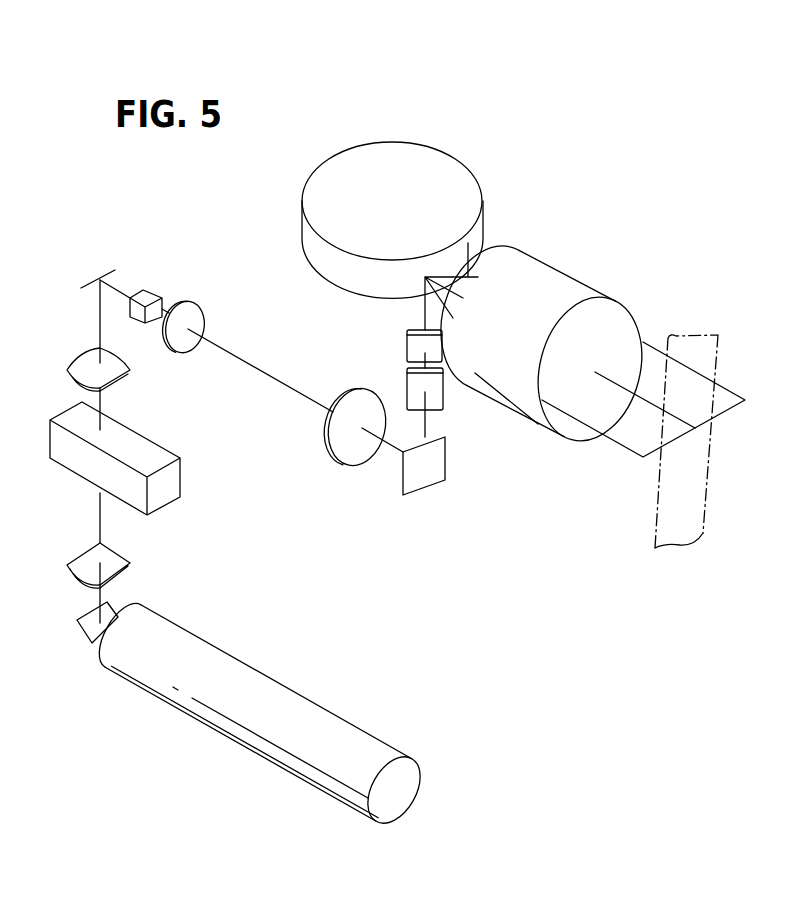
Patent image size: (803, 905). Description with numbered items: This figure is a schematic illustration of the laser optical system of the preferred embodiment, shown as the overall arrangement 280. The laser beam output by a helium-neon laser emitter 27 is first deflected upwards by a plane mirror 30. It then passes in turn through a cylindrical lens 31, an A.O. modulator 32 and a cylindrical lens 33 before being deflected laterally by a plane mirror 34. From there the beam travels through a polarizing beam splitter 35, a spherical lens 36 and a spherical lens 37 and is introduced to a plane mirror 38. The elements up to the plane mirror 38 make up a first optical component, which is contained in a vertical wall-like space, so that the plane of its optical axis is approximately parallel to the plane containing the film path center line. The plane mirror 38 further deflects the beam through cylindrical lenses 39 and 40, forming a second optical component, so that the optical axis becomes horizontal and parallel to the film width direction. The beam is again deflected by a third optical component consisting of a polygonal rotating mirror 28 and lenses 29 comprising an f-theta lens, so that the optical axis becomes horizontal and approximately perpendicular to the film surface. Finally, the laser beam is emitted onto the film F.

The helium-neon laser emitter 27 is at (341, 717).
The polygonal rotating mirror 28 is at (423, 160).
The lenses comprising a f-θ lens 29 is at (644, 325).
The plane mirror 30 is at (77, 620).
The cylindrical lens 31 is at (128, 562).
The A.O. modulator 32 is at (160, 498).
The cylindrical lens 33 is at (67, 373).
The plane mirror 34 is at (92, 273).
The polarizing beam splitter 35 is at (145, 292).
The spherical lens 36 is at (180, 348).
The spherical lens 37 is at (344, 451).
The plane mirror 38 is at (420, 483).
The cylindrical lens 39 is at (443, 410).
The cylindrical lens 40 is at (443, 362).
The film F is at (663, 473).
The optical scanning unit 280 is at (507, 572).